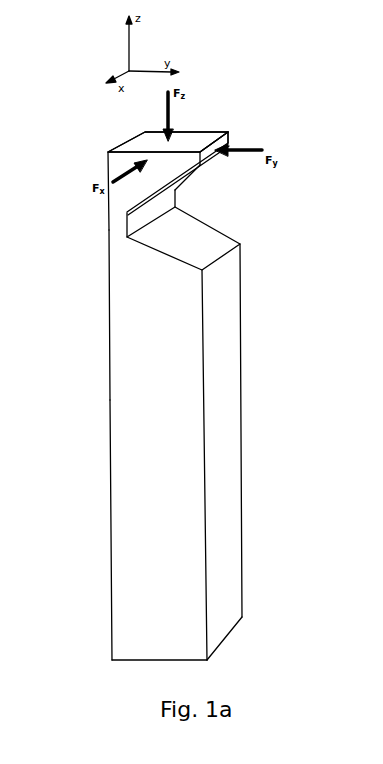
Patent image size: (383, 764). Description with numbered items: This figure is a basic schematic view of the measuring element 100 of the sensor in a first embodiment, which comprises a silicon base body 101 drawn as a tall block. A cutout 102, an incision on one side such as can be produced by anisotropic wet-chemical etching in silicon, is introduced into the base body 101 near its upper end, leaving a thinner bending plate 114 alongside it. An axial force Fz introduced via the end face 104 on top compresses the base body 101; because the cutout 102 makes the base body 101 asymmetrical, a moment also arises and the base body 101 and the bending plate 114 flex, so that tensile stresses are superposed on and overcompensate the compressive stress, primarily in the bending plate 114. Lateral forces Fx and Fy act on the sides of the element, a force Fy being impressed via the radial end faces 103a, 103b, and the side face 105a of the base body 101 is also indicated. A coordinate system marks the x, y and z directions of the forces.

The measuring element 100 is at (105, 153).
The silicon base body 101 is at (213, 290).
The cutout 102 is at (177, 232).
The radial end face 103a is at (108, 168).
The radial end face 103b is at (228, 134).
The end face 104 is at (188, 139).
The side face of base body 105a is at (133, 438).
The bending plate 114 is at (108, 226).